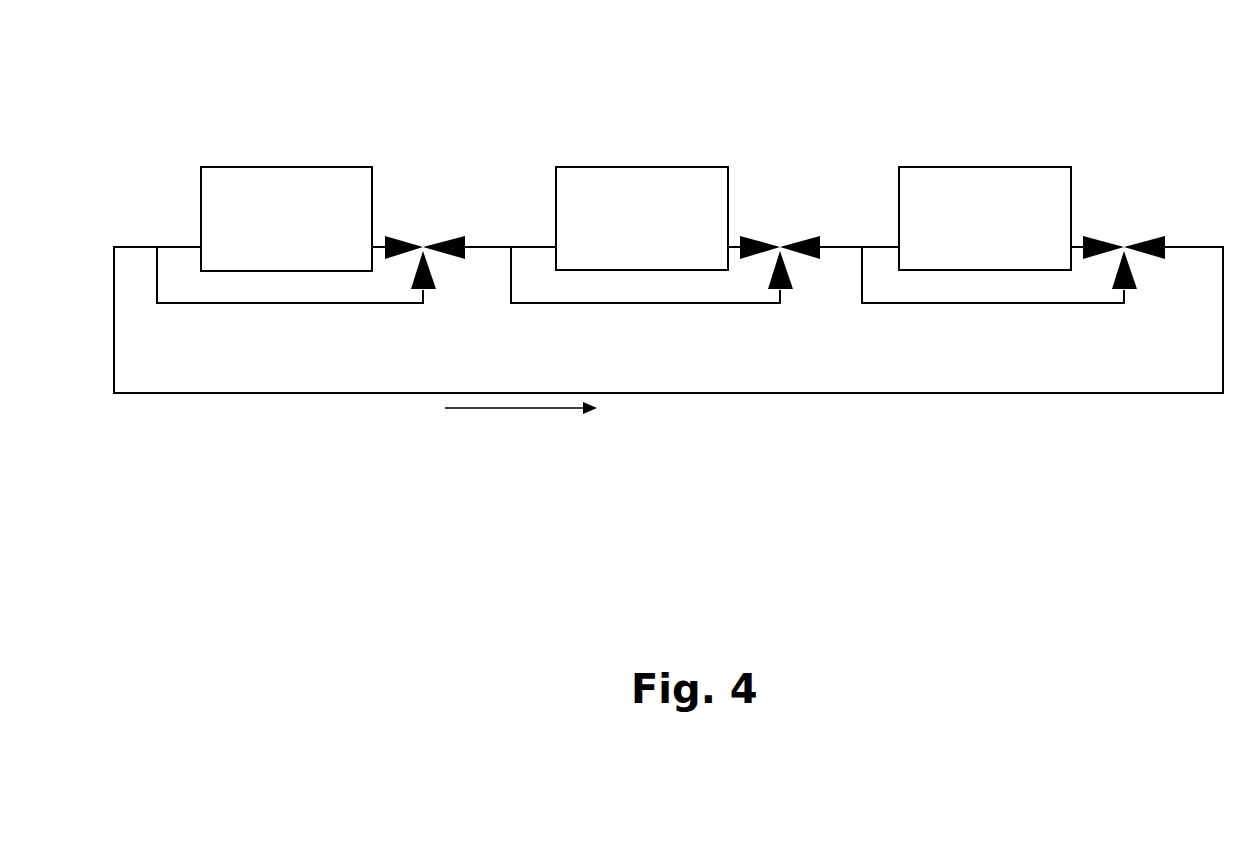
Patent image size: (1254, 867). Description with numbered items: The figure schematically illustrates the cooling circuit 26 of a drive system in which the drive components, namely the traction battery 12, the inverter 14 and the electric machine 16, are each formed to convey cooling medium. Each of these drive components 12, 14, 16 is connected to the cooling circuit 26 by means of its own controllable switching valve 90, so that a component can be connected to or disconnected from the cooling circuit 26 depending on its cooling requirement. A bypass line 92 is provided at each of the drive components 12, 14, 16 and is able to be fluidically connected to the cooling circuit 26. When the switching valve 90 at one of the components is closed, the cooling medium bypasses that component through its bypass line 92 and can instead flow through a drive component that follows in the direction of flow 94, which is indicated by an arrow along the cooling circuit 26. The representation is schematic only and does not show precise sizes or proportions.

The traction battery 12 is at (985, 218).
The inverter 14 is at (642, 218).
The electric machine 16 is at (286, 219).
The cooling circuit 26 is at (1162, 393).
The controllable switching valve 90 is at (422, 229).
The bypass line 92 is at (340, 303).
The direction of flow 94 is at (533, 408).